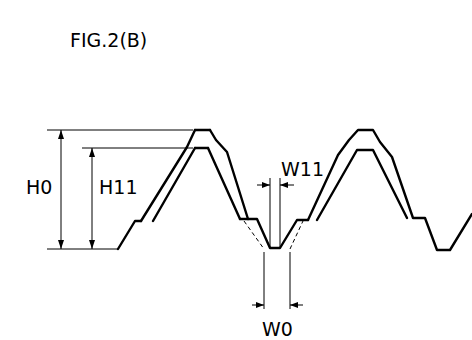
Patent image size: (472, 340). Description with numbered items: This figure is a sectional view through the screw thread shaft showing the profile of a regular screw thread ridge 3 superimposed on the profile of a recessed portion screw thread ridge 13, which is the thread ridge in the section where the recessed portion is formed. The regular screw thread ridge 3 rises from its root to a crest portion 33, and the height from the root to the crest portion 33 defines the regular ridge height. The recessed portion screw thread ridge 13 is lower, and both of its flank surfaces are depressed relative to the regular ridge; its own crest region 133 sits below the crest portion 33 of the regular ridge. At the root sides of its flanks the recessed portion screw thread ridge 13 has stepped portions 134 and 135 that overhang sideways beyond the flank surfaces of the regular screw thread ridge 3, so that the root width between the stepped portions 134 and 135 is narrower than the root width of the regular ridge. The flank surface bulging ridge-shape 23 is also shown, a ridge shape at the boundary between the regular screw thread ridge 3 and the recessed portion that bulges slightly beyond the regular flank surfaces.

The regular screw thread ridge 3 is at (220, 146).
The recessed portion screw thread ridge 13 is at (227, 177).
The flank surface bulging ridge-shape 23 is at (229, 158).
The crest portion 33 is at (205, 129).
The top portion of first tooth portion 133 is at (194, 146).
The stepped portion 134 is at (143, 220).
The stepped portion 135 is at (241, 218).